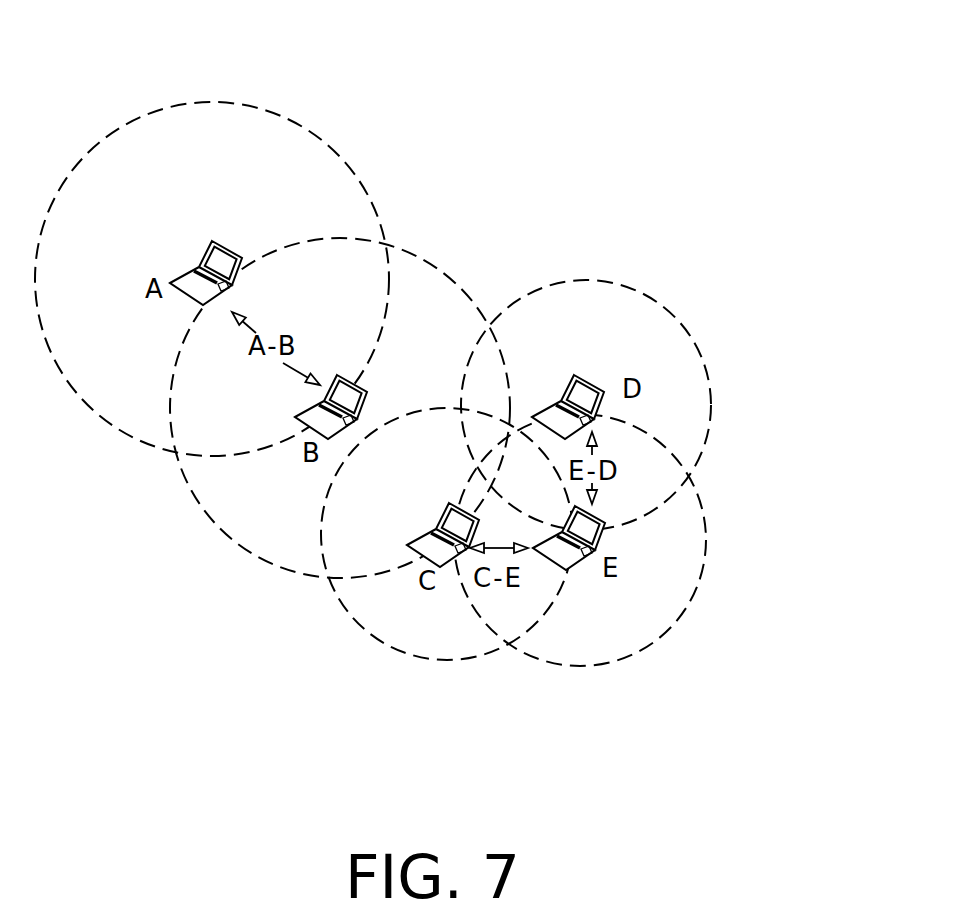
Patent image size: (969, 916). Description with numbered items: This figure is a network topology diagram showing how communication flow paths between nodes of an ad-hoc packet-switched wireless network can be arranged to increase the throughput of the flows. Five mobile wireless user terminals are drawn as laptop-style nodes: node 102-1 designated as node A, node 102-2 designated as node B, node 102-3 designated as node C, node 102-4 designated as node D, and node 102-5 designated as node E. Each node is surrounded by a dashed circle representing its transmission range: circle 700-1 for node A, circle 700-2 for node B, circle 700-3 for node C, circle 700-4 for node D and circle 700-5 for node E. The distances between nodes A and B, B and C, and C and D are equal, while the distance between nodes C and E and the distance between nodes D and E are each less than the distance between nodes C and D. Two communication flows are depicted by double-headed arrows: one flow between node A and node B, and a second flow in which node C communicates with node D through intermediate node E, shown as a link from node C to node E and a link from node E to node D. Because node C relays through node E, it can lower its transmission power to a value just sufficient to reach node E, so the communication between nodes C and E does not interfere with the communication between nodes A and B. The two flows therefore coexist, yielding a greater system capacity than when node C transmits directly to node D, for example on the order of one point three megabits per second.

The transmission range of node A 700-1 is at (230, 103).
The transmission range of node B 700-2 is at (430, 263).
The transmission range of node C 700-3 is at (343, 608).
The transmission range of node D 700-4 is at (711, 385).
The transmission range of node E 700-5 is at (706, 537).
The mobile wireless user terminal 102-1 is at (238, 240).
The mobile wireless user terminal 102-2 is at (348, 370).
The mobile wireless user terminal 102-3 is at (423, 562).
The mobile wireless user terminal 102-4 is at (593, 370).
The mobile wireless user terminal 102-5 is at (607, 535).